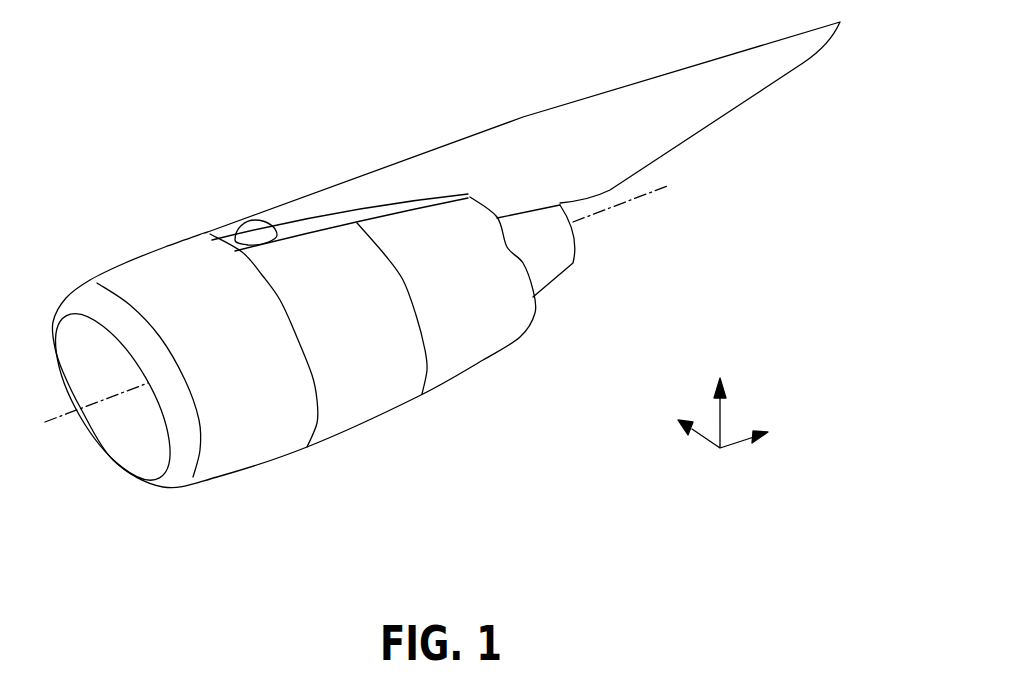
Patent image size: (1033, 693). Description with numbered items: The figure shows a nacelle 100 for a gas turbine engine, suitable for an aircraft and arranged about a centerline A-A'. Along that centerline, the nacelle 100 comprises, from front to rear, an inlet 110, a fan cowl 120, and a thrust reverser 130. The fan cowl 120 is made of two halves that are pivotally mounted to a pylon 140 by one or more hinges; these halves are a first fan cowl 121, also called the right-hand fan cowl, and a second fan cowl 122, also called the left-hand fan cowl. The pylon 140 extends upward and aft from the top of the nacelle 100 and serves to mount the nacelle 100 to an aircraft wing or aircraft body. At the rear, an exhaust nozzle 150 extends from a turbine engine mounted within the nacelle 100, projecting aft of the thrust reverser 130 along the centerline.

The nacelle 100 is at (155, 105).
The inlet 110 is at (130, 287).
The fan cowl 120 is at (397, 397).
The first fan cowl 121 is at (219, 236).
The second fan cowl 122 is at (343, 408).
The thrust reverser 130 is at (477, 343).
The pylon 140 is at (475, 150).
The exhaust nozzle 150 is at (556, 255).